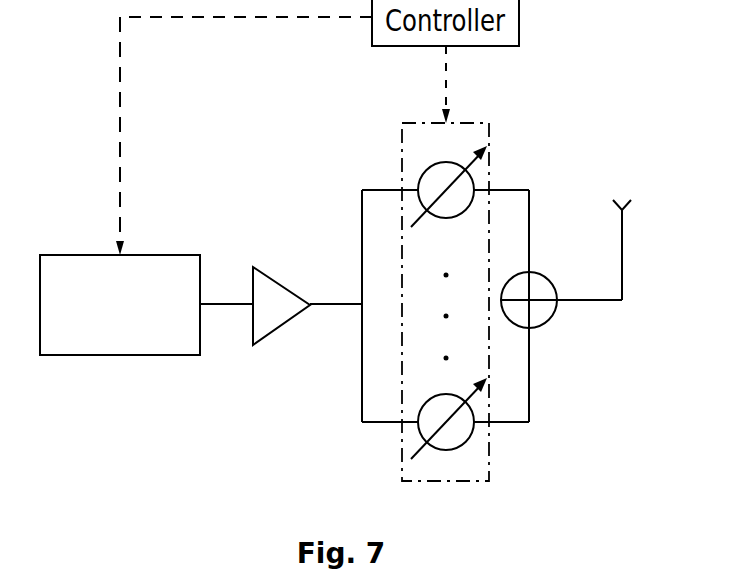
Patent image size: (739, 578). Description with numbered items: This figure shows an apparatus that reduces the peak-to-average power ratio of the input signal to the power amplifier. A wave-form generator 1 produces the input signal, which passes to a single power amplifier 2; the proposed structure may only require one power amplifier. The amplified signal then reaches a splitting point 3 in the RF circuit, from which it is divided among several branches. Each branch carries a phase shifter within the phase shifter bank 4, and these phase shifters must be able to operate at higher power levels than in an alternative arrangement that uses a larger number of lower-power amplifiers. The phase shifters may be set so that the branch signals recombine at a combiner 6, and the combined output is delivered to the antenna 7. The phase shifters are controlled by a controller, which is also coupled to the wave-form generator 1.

The wave-form generator 1 is at (120, 340).
The amplifier 2 is at (255, 280).
The power divider 3 is at (364, 306).
The phase shifter array 4 is at (431, 294).
The combiner 6 is at (521, 306).
The antenna 7 is at (594, 213).